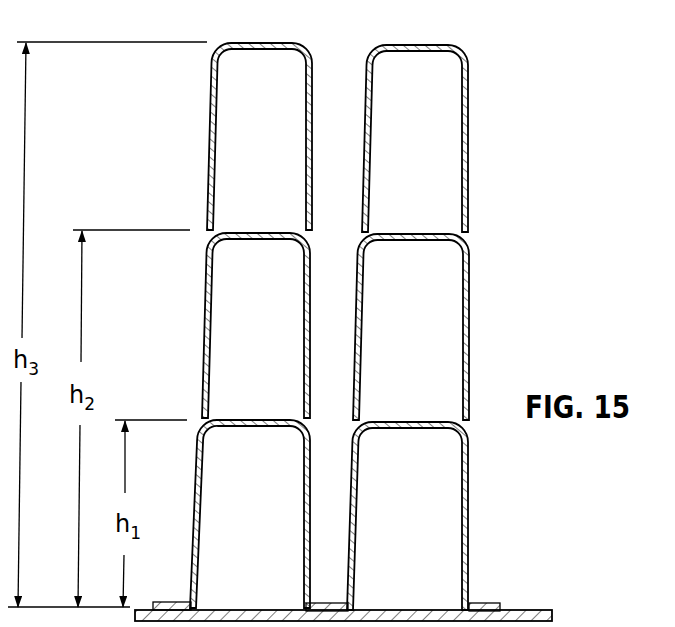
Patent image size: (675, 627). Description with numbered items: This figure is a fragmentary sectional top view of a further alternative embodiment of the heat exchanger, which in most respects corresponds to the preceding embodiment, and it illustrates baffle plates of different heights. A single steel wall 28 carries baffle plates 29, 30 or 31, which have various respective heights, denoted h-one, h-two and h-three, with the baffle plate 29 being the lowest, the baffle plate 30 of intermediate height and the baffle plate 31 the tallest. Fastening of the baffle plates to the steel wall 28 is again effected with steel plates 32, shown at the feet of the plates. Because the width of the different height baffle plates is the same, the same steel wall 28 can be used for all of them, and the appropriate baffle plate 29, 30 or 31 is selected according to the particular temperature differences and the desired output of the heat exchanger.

The steel wall 28 is at (423, 611).
The baffle plate 29 is at (469, 500).
The baffle plate 30 is at (470, 324).
The baffle plate 31 is at (469, 136).
The steel plates 32 is at (492, 603).